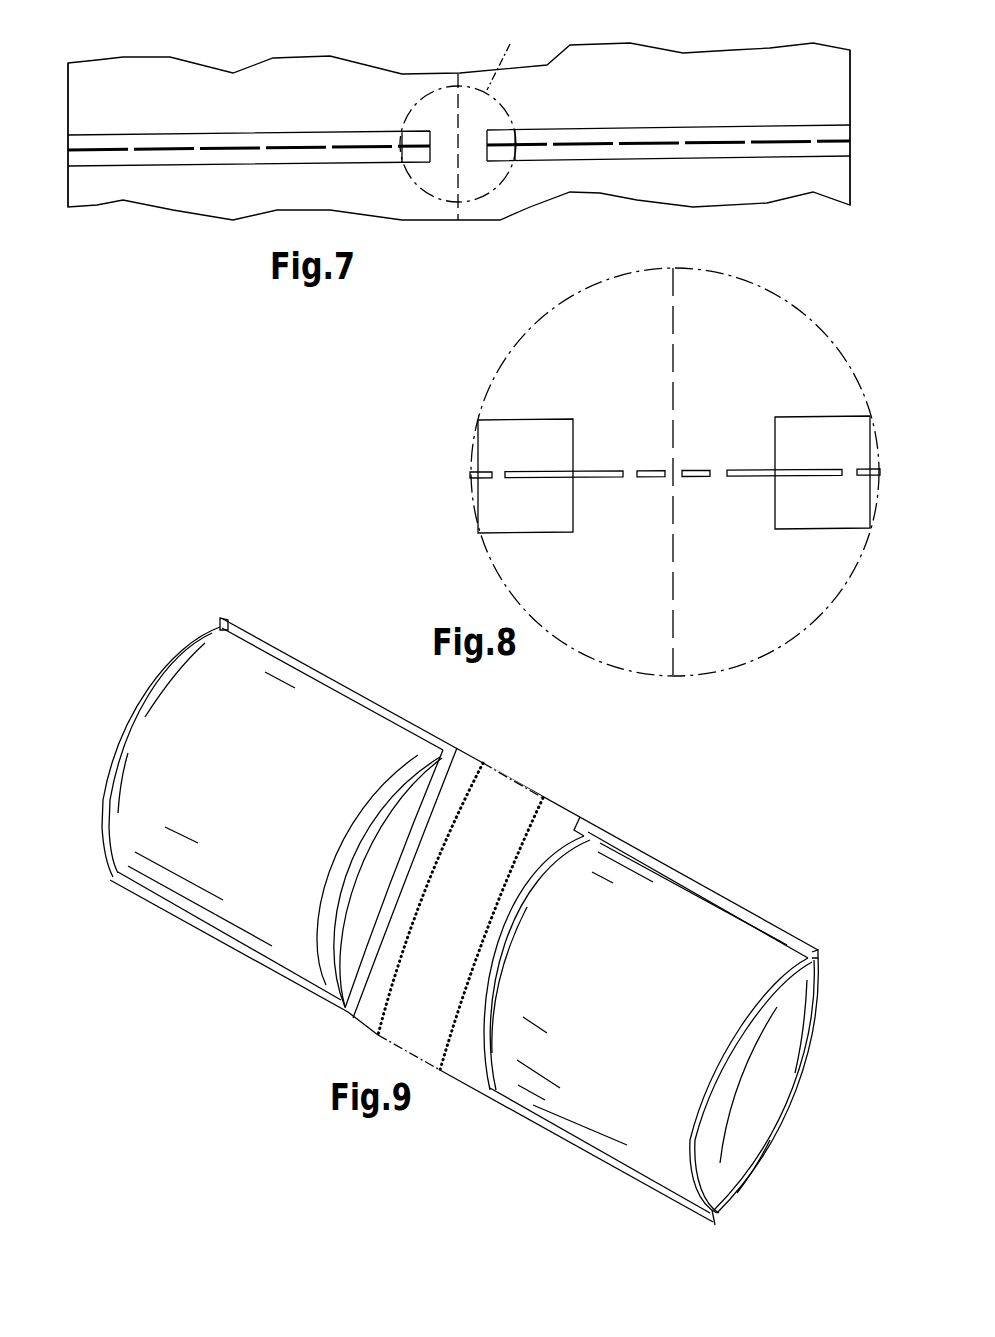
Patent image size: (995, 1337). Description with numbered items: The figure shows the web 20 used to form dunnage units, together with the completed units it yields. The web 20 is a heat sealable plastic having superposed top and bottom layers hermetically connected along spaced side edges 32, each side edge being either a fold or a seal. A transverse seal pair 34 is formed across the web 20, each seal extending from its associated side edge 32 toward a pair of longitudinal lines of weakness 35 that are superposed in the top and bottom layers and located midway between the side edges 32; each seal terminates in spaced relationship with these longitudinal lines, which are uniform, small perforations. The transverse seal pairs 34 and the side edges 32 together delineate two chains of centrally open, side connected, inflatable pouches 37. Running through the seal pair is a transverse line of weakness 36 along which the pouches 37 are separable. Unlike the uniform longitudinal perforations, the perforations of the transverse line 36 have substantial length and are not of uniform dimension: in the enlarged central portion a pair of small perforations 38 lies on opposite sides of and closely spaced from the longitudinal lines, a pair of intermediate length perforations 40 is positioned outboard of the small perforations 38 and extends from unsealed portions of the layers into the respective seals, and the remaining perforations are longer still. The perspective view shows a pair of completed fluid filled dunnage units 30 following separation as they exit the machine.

In FIG. 7, the web 20 is at (528, 230).
In FIG. 9, the dunnage unit 30 is at (257, 900).
In FIG. 7, the side edge 32 is at (67, 103).
In FIG. 7, the transverse seal pair 34 is at (290, 143).
In FIG. 8, the transverse seal pair 34 is at (673, 384).
In FIG. 7, the longitudinal lines of weakness 35 is at (460, 210).
In FIG. 7, the transverse line of weakness 36 is at (723, 143).
In FIG. 8, the transverse line of weakness 36 is at (744, 462).
In FIG. 7, the inflatable pouch 37 is at (152, 107).
In FIG. 8, the small perforation 38 is at (695, 478).
In FIG. 8, the intermediate length perforation 40 is at (740, 468).